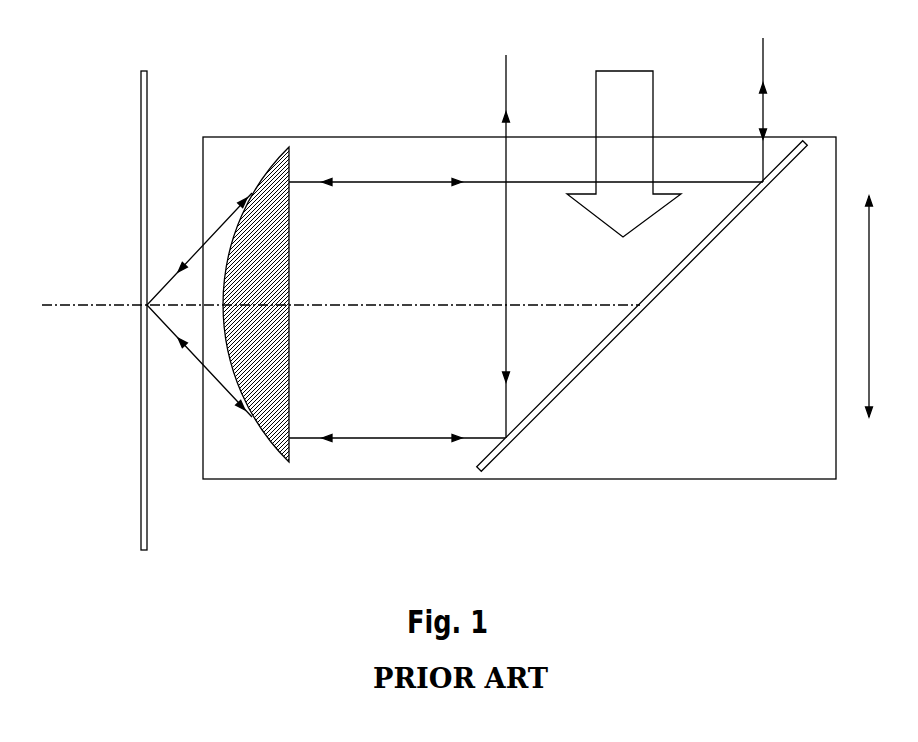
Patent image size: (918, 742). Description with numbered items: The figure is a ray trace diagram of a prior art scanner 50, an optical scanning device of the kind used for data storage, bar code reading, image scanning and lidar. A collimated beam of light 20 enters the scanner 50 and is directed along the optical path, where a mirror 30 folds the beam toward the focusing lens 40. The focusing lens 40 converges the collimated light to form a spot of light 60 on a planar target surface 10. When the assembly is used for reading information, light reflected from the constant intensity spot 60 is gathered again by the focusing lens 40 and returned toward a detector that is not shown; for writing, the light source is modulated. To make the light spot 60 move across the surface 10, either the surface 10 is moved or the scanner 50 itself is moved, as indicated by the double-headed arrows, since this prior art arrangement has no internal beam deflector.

The planar target surface 10 is at (150, 103).
The collimated beam of light 20 is at (636, 116).
The mirror 30 is at (723, 233).
The focusing lens 40 is at (290, 227).
The prior art scanner 50 is at (413, 480).
The spot of light 60 is at (149, 309).